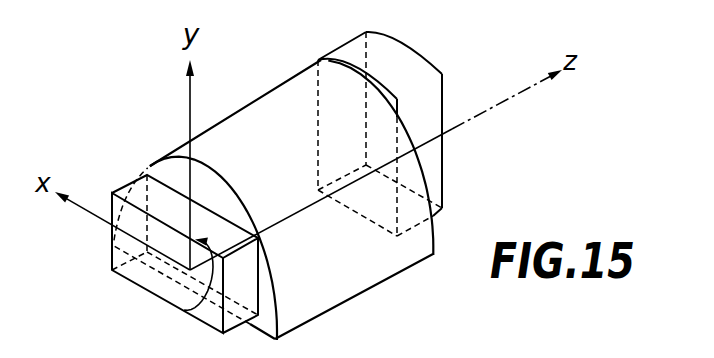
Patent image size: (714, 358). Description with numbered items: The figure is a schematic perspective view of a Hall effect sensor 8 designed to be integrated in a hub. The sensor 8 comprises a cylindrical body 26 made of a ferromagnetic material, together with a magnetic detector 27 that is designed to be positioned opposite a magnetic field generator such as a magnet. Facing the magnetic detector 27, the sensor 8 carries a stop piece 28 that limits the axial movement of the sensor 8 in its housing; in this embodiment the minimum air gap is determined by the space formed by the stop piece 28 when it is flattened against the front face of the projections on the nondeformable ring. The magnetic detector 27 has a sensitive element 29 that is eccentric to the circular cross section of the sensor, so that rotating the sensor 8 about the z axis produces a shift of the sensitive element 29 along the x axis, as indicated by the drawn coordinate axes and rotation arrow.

The sensor 8 is at (243, 88).
The cylindrical body 26 is at (337, 253).
The magnetic detector 27 is at (135, 280).
The stop piece 28 is at (383, 70).
The sensitive element 29 is at (185, 276).